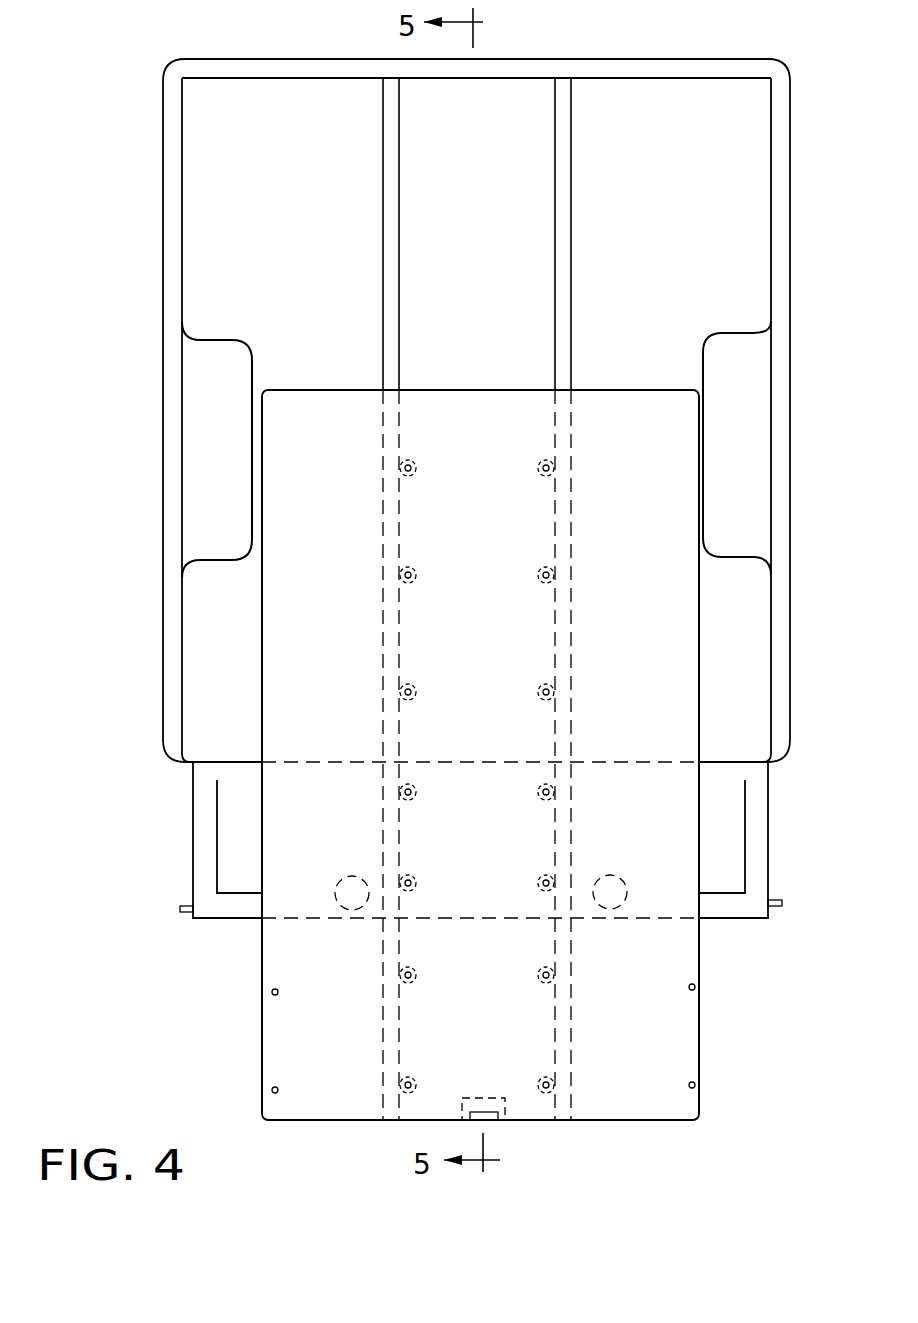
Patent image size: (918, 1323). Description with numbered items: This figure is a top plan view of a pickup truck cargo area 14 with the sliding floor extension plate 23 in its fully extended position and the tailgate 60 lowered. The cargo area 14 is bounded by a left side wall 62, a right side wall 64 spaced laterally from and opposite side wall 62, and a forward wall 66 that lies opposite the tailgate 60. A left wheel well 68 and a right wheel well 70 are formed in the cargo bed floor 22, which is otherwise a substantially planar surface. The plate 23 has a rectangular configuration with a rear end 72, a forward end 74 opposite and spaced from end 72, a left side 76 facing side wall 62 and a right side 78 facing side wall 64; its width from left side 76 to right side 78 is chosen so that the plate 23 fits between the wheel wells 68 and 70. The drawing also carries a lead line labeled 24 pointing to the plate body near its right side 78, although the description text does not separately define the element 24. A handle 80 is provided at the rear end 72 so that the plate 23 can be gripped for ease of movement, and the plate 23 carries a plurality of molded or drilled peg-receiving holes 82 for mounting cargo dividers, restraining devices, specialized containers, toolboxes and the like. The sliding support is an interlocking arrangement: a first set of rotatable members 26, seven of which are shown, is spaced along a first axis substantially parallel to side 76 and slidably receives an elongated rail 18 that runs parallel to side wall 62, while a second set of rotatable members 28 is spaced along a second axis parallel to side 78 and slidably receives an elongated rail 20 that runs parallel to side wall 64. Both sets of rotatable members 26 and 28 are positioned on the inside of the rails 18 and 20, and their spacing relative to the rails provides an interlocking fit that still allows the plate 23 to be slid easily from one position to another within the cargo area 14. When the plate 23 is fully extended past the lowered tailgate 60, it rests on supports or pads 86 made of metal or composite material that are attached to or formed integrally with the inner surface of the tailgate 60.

The cargo area 14 is at (451, 410).
The elongated rail 18 is at (393, 148).
The elongated rail 20 is at (562, 147).
The cargo bed floor 22 is at (205, 212).
The plate 23 is at (487, 428).
The panel 24 is at (479, 749).
The first set of rotatable members 26 is at (398, 488).
The second set of rotatable members 28 is at (557, 488).
The tailgate 60 is at (730, 858).
The left side wall 62 is at (181, 122).
The right side wall 64 is at (768, 166).
The forward wall 66 is at (648, 78).
The left wheel well 68 is at (210, 403).
The right wheel well 70 is at (748, 445).
The rear end 72 is at (357, 1122).
The forward end 74 is at (606, 390).
The left side 76 is at (260, 590).
The right side 78 is at (697, 630).
The handle 80 is at (505, 1122).
The peg-receiving holes 82 is at (280, 992).
The supports or pads 86 is at (352, 876).